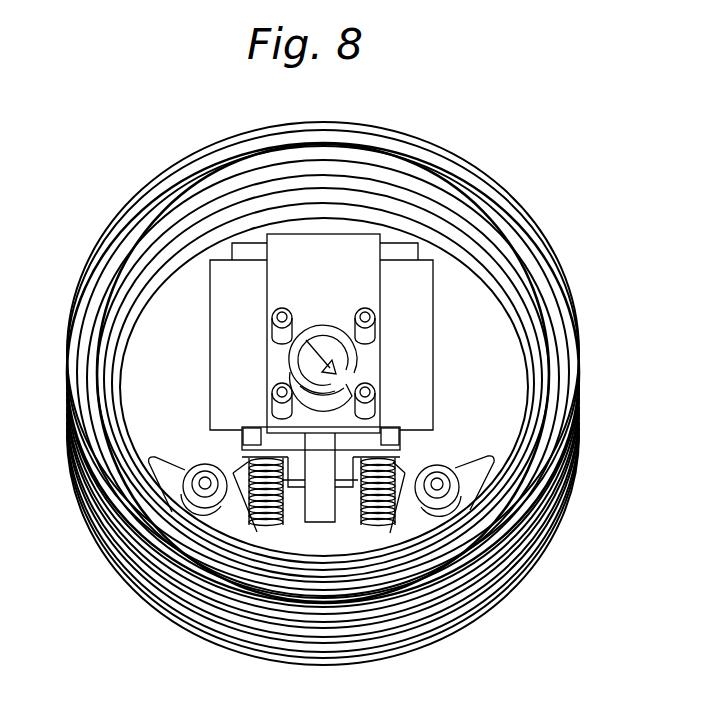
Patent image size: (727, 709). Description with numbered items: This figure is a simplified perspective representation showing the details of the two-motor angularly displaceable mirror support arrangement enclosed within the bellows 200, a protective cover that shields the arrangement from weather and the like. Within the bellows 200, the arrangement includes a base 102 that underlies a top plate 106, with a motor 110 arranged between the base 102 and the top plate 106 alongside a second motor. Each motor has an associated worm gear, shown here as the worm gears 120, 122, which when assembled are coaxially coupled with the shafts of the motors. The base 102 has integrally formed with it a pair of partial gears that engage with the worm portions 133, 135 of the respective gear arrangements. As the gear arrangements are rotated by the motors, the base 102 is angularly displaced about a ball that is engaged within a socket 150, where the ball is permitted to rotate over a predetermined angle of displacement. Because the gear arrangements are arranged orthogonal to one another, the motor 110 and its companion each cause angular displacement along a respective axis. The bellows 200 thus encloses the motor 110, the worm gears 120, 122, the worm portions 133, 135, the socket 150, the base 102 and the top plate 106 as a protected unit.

The bellows 200 is at (451, 160).
The top plate 106 is at (462, 393).
The base 102 is at (228, 357).
The motor 110 is at (423, 363).
The socket 150 is at (318, 348).
The worm gear 120 is at (376, 527).
The worm gear 122 is at (261, 525).
The worm portion 135 is at (200, 465).
The worm portion 133 is at (446, 466).